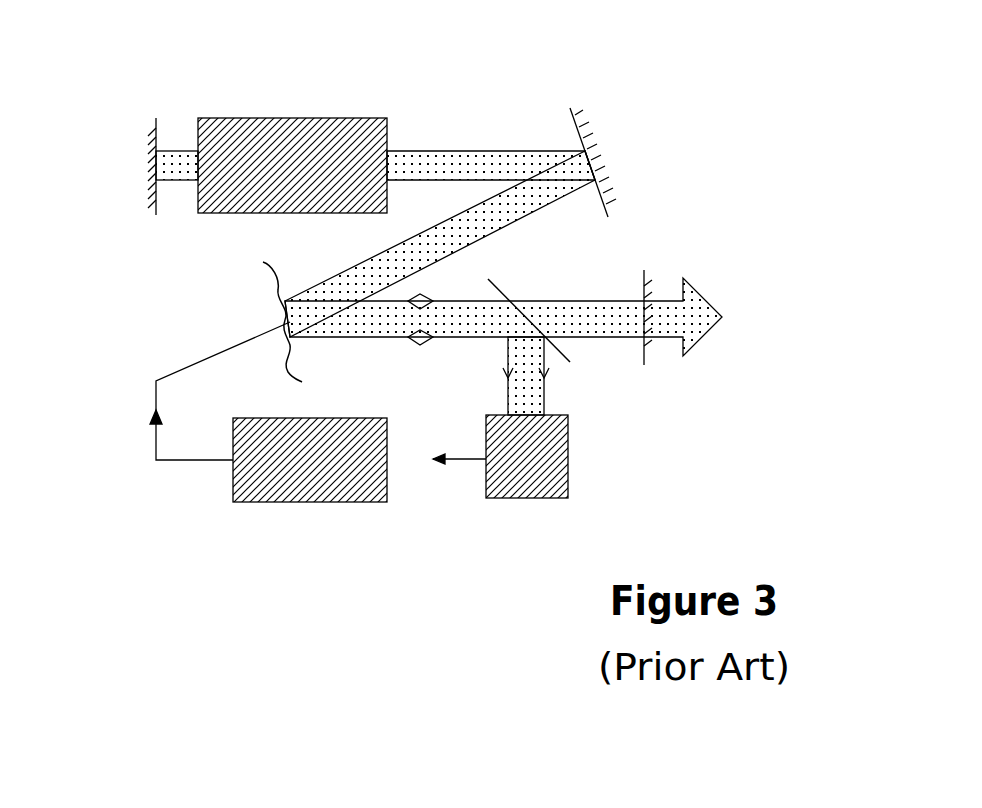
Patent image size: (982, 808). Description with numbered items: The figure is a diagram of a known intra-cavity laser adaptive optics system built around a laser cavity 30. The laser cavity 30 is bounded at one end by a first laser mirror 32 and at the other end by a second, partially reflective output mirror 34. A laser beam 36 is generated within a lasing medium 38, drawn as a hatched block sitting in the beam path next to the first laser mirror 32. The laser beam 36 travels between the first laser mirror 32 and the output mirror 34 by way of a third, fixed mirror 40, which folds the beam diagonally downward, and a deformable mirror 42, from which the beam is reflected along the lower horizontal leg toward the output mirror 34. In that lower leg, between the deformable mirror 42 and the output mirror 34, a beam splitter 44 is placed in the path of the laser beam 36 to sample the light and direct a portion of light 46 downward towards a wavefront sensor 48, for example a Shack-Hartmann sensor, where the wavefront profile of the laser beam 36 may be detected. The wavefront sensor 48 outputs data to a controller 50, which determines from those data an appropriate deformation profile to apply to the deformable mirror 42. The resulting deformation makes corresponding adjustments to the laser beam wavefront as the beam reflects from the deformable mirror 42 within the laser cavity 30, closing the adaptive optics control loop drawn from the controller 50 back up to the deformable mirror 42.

The laser cavity 30 is at (186, 569).
The first laser mirror 32 is at (156, 127).
The second, partially reflective output mirror 34 is at (646, 280).
The laser beam 36 is at (440, 150).
The lasing medium 38 is at (255, 118).
The third, fixed mirror 40 is at (576, 124).
The deformable mirror 42 is at (274, 283).
The beam splitter 44 is at (563, 358).
The portion of light 46 is at (508, 352).
The wavefront sensor 48 is at (530, 498).
The controller 50 is at (345, 502).